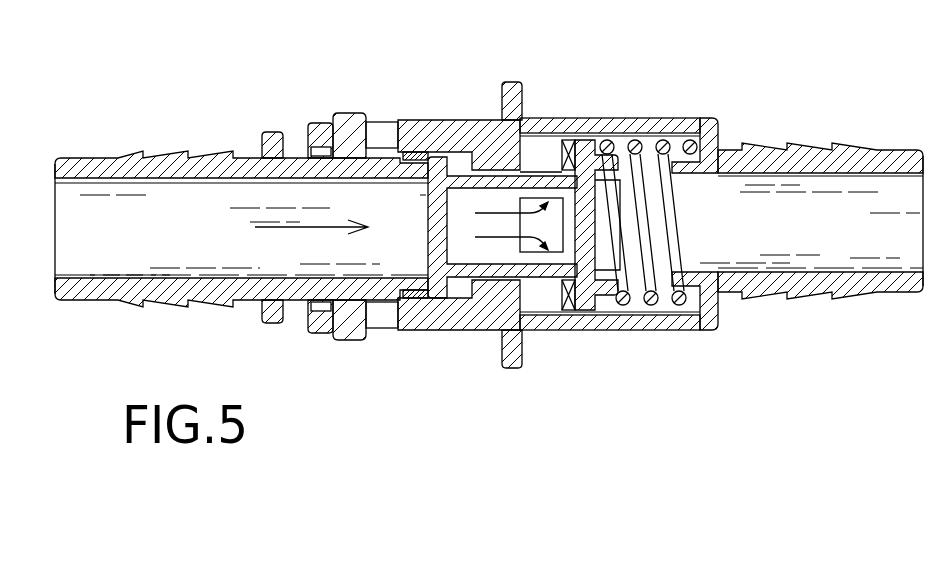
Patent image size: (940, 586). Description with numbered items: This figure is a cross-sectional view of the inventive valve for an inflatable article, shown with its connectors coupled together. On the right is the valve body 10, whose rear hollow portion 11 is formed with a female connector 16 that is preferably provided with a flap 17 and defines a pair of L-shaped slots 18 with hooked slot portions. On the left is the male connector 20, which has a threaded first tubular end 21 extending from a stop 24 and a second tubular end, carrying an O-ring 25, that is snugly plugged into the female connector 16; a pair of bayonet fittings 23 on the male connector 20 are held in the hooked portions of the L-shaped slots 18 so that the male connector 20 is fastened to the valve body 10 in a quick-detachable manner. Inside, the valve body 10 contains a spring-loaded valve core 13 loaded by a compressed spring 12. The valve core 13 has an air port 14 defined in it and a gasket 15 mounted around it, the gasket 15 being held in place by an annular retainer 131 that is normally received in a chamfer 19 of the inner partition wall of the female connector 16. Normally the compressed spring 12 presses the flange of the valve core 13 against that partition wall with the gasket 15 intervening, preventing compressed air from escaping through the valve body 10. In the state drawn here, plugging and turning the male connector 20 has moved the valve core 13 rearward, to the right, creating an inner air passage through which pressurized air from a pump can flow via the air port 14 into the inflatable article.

The valve body 10 is at (697, 88).
The rear hollow portion 11 is at (665, 326).
The compressed spring 12 is at (627, 305).
The valve core 13 is at (470, 278).
The air port 14 is at (548, 252).
The gasket 15 is at (583, 142).
The annular retainer 131 is at (576, 143).
The female connector 16 is at (315, 125).
The flap 17 is at (510, 80).
The L-shaped slots 18 is at (384, 122).
The chamfer 19 is at (540, 136).
The male connector 20 is at (127, 113).
The threaded first tubular end 21 is at (178, 297).
The bayonet fittings 23 is at (345, 112).
The stop 24 is at (271, 323).
The O-ring 25 is at (415, 150).